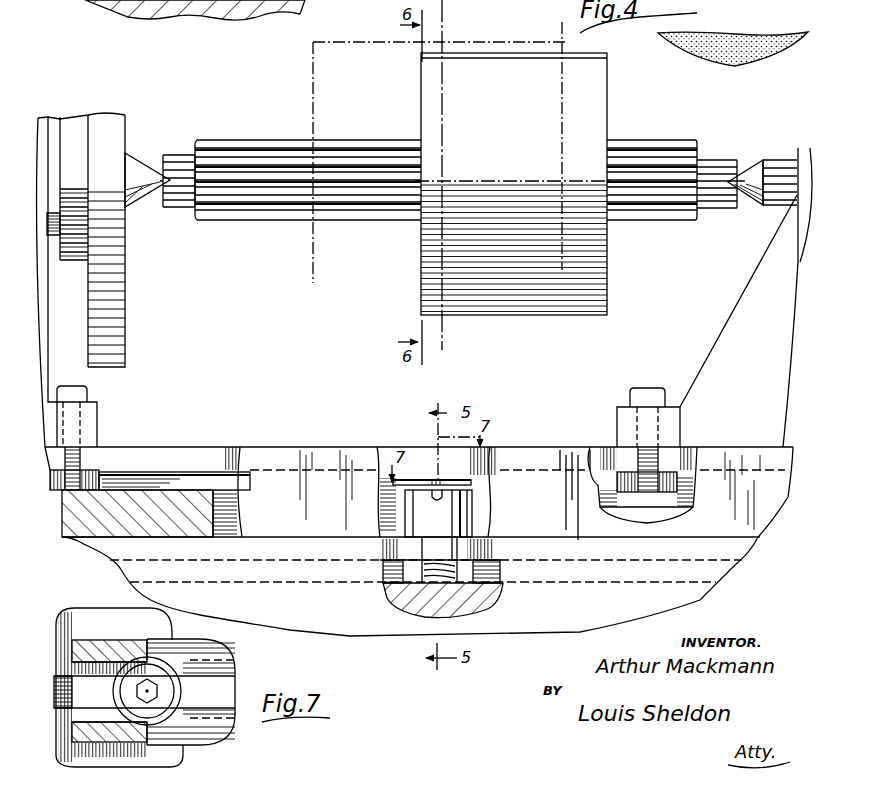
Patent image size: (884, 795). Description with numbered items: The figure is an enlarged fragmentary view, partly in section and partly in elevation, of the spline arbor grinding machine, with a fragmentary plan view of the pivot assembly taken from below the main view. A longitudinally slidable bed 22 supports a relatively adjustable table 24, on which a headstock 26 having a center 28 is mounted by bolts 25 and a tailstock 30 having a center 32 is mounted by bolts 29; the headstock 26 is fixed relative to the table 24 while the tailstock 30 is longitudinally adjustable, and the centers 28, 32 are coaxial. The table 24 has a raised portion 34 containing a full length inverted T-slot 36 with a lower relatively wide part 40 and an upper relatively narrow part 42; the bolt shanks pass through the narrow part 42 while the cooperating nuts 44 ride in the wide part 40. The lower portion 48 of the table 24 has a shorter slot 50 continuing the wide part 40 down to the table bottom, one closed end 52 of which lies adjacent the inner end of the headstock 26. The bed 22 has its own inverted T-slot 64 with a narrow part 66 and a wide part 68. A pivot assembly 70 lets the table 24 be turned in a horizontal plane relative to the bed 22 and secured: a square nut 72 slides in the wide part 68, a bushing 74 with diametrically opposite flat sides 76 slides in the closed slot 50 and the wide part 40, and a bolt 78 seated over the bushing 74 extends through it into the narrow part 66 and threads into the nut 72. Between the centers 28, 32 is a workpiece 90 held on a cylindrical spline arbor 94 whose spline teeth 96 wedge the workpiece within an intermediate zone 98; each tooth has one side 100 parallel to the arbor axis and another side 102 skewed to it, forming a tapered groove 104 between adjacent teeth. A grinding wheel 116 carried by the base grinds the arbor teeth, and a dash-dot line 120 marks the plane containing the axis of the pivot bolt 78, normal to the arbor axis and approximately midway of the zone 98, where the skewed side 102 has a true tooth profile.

In FIG. 4, the bed 22 is at (121, 577).
In FIG. 7, the bed 22 is at (62, 613).
In FIG. 4, the table 24 is at (273, 450).
In FIG. 7, the table 24 is at (229, 650).
In FIG. 4, the headstock bolts 25 is at (88, 396).
In FIG. 4, the headstock 26 is at (50, 378).
In FIG. 4, the headstock center 28 is at (133, 153).
In FIG. 4, the tailstock bolts 29 is at (638, 388).
In FIG. 4, the tailstock 30 is at (738, 301).
In FIG. 4, the tailstock center 32 is at (778, 160).
In FIG. 4, the raised portion 34 is at (352, 448).
In FIG. 4, the inverted T-slot 36 is at (185, 493).
In FIG. 4, the relatively wide part 40 is at (160, 472).
In FIG. 7, the relatively wide part 40 is at (107, 642).
In FIG. 4, the relatively narrow part 42 is at (218, 447).
In FIG. 7, the relatively narrow part 42 is at (236, 676).
In FIG. 4, the nuts 44 is at (99, 473).
In FIG. 4, the lower portion 48 is at (68, 525).
In FIG. 4, the slot 50 is at (233, 538).
In FIG. 4, the closed end 52 is at (213, 499).
In FIG. 4, the inverted T-slot 64 is at (485, 535).
In FIG. 7, the inverted T-slot 64 is at (50, 701).
In FIG. 4, the relatively narrow part 66 is at (470, 573).
In FIG. 4, the relatively wide part 68 is at (495, 550).
In FIG. 7, the relatively wide part 68 is at (70, 671).
In FIG. 4, the pivot assembly 70 is at (477, 500).
In FIG. 7, the pivot assembly 70 is at (184, 692).
In FIG. 4, the square nut 72 is at (470, 585).
In FIG. 4, the bushing 74 is at (432, 509).
In FIG. 7, the bushing 74 is at (112, 688).
In FIG. 4, the flat sides 76 is at (432, 518).
In FIG. 7, the flat sides 76 is at (148, 642).
In FIG. 4, the bolt 78 is at (480, 480).
In FIG. 7, the bolt 78 is at (119, 697).
In FIG. 4, the workpiece 90 is at (420, 91).
In FIG. 4, the spline arbor 94 is at (243, 223).
In FIG. 4, the spline teeth 96 is at (215, 142).
In FIG. 4, the intermediate zone 98 is at (386, 42).
In FIG. 4, the parallel side 100 is at (422, 182).
In FIG. 4, the skewed side 102 is at (422, 158).
In FIG. 4, the tapered groove 104 is at (422, 170).
In FIG. 4, the grinding wheel 116 is at (724, 68).
In FIG. 4, the dash-dot line 120 is at (444, 22).